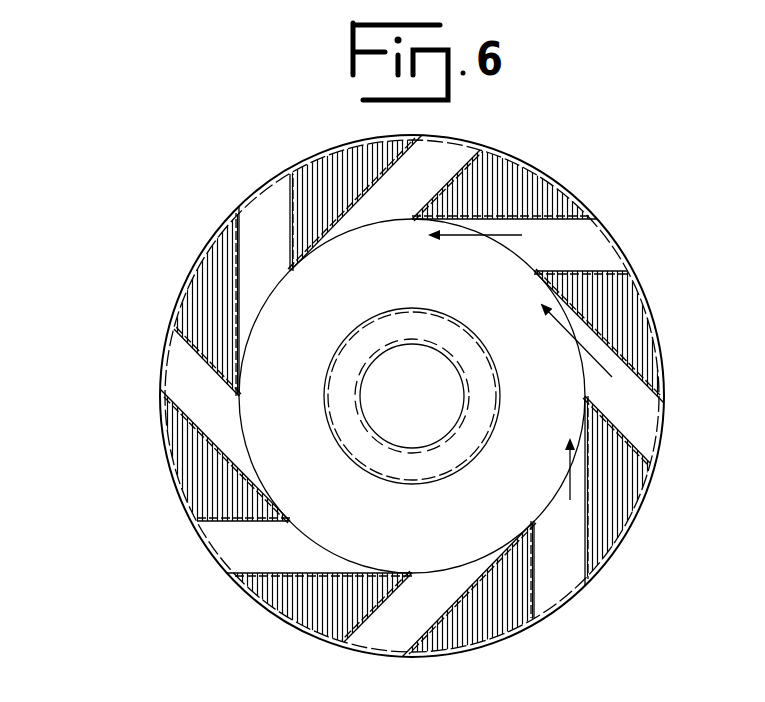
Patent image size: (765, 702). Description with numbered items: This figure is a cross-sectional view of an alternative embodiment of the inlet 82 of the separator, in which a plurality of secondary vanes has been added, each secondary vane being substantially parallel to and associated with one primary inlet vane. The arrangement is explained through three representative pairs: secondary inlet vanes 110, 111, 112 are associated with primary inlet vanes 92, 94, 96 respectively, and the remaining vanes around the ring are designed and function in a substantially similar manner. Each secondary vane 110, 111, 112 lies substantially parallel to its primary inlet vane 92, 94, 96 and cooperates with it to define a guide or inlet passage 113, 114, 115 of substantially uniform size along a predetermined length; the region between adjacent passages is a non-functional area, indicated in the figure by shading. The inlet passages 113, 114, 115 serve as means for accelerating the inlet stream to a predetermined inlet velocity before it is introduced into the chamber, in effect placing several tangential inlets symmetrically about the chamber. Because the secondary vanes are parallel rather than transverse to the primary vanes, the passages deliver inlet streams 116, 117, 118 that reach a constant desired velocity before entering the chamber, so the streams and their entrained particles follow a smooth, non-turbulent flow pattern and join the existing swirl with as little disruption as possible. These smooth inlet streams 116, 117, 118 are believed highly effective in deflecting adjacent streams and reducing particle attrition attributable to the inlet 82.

The inlet 82 is at (108, 394).
The primary inlet vane 92 is at (586, 542).
The primary inlet vane 94 is at (645, 380).
The primary inlet vane 96 is at (553, 211).
The secondary inlet vane 110 is at (538, 602).
The secondary inlet vane 111 is at (650, 452).
The secondary inlet vane 112 is at (607, 271).
The inlet passage 113 is at (568, 562).
The inlet passage 114 is at (638, 415).
The inlet passage 115 is at (586, 262).
The inlet stream 116 is at (566, 459).
The inlet stream 117 is at (560, 325).
The inlet stream 118 is at (488, 237).